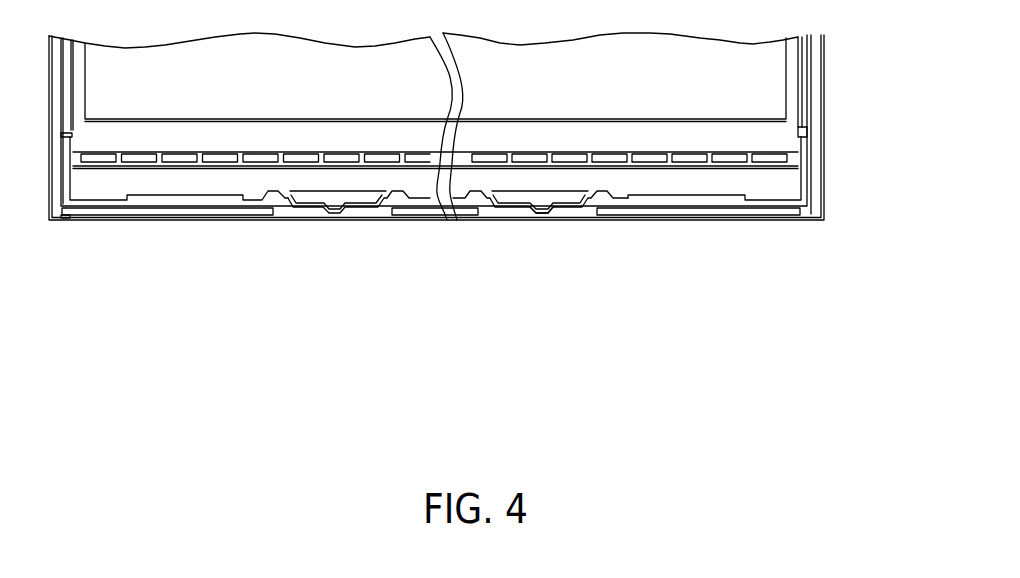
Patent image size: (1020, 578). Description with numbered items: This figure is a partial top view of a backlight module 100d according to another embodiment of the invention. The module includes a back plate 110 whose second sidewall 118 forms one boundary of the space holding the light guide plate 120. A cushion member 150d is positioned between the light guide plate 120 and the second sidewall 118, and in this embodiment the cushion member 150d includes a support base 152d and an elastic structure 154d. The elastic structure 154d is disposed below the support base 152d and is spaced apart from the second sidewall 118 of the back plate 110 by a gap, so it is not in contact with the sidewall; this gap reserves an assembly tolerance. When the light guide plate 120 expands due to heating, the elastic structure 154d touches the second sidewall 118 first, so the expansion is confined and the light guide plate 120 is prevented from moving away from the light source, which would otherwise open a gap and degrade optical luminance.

The backlight module 100d is at (478, 229).
The back plate 110 is at (436, 197).
The second sidewall 118 is at (477, 218).
The light guide plate 120 is at (730, 84).
The cushion member 150d is at (435, 281).
The support base 152d is at (523, 178).
The elastic structure 154d is at (553, 207).